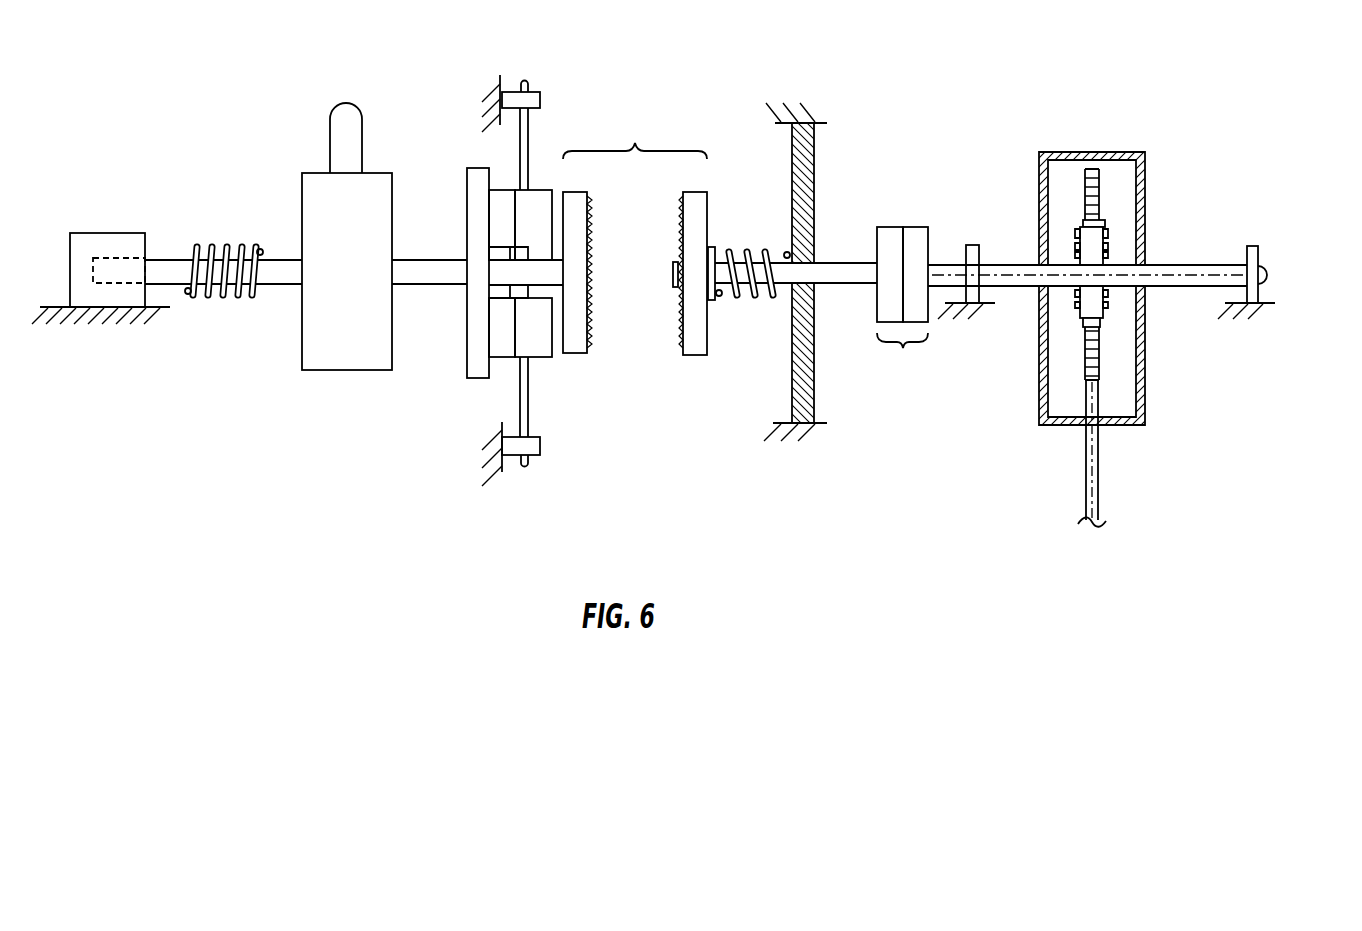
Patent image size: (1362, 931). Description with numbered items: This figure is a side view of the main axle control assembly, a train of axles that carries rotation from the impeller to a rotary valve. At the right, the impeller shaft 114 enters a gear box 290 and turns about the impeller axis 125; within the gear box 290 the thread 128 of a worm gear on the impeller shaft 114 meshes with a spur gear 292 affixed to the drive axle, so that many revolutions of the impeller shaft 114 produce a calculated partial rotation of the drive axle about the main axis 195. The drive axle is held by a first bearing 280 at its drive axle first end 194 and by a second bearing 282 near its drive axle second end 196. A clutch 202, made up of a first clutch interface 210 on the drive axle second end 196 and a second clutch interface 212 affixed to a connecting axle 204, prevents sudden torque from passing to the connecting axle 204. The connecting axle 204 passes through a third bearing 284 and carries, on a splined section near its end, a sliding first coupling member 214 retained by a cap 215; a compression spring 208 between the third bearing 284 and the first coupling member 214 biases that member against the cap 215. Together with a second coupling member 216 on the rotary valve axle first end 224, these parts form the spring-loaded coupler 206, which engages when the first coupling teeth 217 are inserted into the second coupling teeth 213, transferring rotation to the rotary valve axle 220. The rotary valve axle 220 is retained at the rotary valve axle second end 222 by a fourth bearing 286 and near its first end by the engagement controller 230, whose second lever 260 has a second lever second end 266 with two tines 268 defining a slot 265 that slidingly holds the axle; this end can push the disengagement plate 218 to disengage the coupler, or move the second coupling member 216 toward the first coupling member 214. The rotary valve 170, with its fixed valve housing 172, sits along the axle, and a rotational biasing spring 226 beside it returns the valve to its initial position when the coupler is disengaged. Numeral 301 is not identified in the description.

The impeller shaft 114 is at (1098, 483).
The impeller axis 125 is at (1088, 463).
The thread 128 is at (1104, 243).
The rotary valve 170 is at (312, 349).
The valve housing 172 is at (348, 372).
The drive axle first end 194 is at (1225, 265).
The main axis 195 is at (1195, 282).
The drive axle second end 196 is at (937, 272).
The clutch 202 is at (902, 355).
The connecting axle 204 is at (866, 262).
The spring-loaded coupler 206 is at (635, 135).
The compression spring 208 is at (757, 292).
The first clutch interface 210 is at (907, 227).
The second clutch interface 212 is at (886, 227).
The second coupling teeth 213 is at (683, 318).
The first coupling member 214 is at (695, 356).
The cap 215 is at (673, 270).
The second coupling member 216 is at (576, 192).
The first coupling teeth 217 is at (592, 233).
The disengagement plate 218 is at (478, 168).
The rotary valve axle 220 is at (280, 286).
The rotary valve axle second end 222 is at (112, 258).
The rotary valve axle first end 224 is at (557, 277).
The rotational biasing spring 226 is at (224, 247).
The engagement controller 230 is at (372, 74).
The second lever 260 is at (535, 335).
The slot 265 is at (497, 295).
The second lever second end 266 is at (505, 358).
The tines 268 is at (497, 236).
The first bearing 280 is at (1262, 252).
The second bearing 282 is at (973, 252).
The third bearing 284 is at (806, 392).
The fourth bearing 286 is at (108, 232).
The gear box 290 is at (1115, 152).
The spur gear 292 is at (1098, 200).
The coupling 301 is at (745, 263).